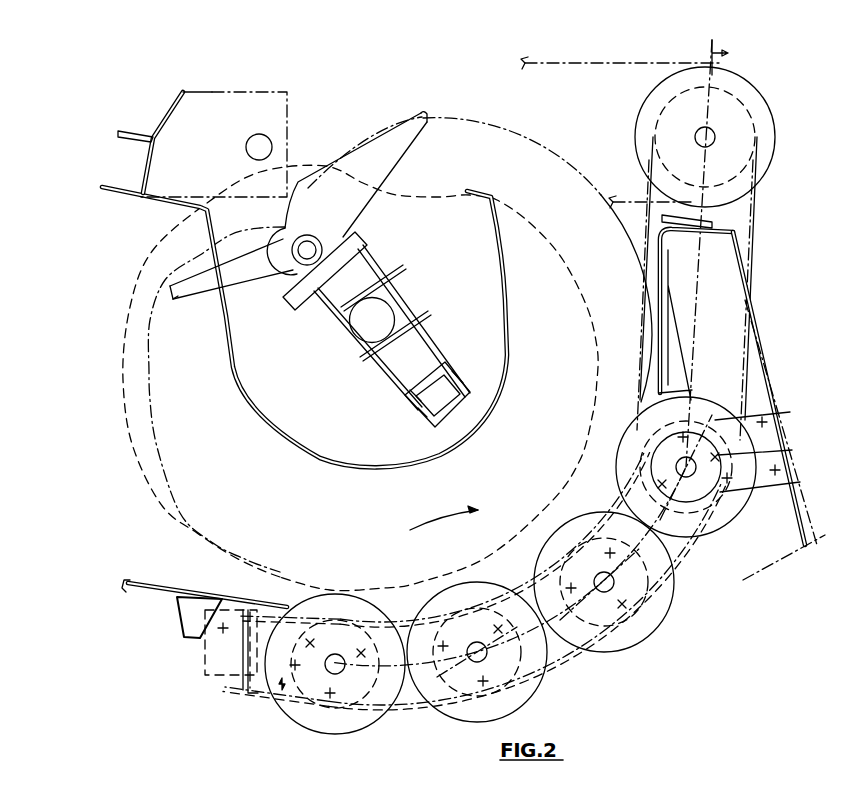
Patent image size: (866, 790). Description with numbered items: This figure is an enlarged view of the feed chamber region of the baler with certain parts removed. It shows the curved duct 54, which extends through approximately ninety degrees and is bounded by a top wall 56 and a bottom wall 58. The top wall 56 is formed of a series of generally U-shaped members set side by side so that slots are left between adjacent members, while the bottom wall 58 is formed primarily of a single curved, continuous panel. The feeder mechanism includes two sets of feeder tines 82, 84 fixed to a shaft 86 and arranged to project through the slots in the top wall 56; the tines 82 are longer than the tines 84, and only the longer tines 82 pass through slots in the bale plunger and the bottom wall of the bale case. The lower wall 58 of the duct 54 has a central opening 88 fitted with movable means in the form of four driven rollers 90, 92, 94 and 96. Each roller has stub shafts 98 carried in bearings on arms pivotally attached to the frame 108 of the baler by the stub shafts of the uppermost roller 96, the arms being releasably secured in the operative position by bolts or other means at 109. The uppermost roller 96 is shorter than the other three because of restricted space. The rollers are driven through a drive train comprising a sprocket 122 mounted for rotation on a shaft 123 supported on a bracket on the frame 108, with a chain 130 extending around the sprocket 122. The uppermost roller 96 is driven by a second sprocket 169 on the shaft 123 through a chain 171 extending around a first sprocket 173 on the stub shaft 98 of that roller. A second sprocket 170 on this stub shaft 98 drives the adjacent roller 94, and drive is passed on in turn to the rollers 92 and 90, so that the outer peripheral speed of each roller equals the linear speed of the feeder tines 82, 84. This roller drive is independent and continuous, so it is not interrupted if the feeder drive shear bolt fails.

The curved duct 54 is at (541, 448).
The top wall 56 is at (506, 378).
The bottom wall 58 is at (162, 597).
The tines 82 is at (407, 147).
The tines 84 is at (253, 280).
The shaft 86 is at (380, 315).
The central opening 88 is at (527, 571).
The roller 90 is at (380, 734).
The roller 92 is at (547, 705).
The roller 94 is at (670, 632).
The uppermost roller 96 is at (757, 518).
The stub shaft 98 is at (333, 670).
The frame 108 is at (760, 330).
The securing means 109 is at (203, 637).
The sprocket 122 is at (763, 147).
The shaft 123 is at (713, 135).
The chain 130 is at (604, 63).
The second sprocket 169 is at (745, 128).
The second sprocket 170 is at (718, 458).
The chain 171 is at (752, 240).
The first sprocket 173 is at (712, 425).